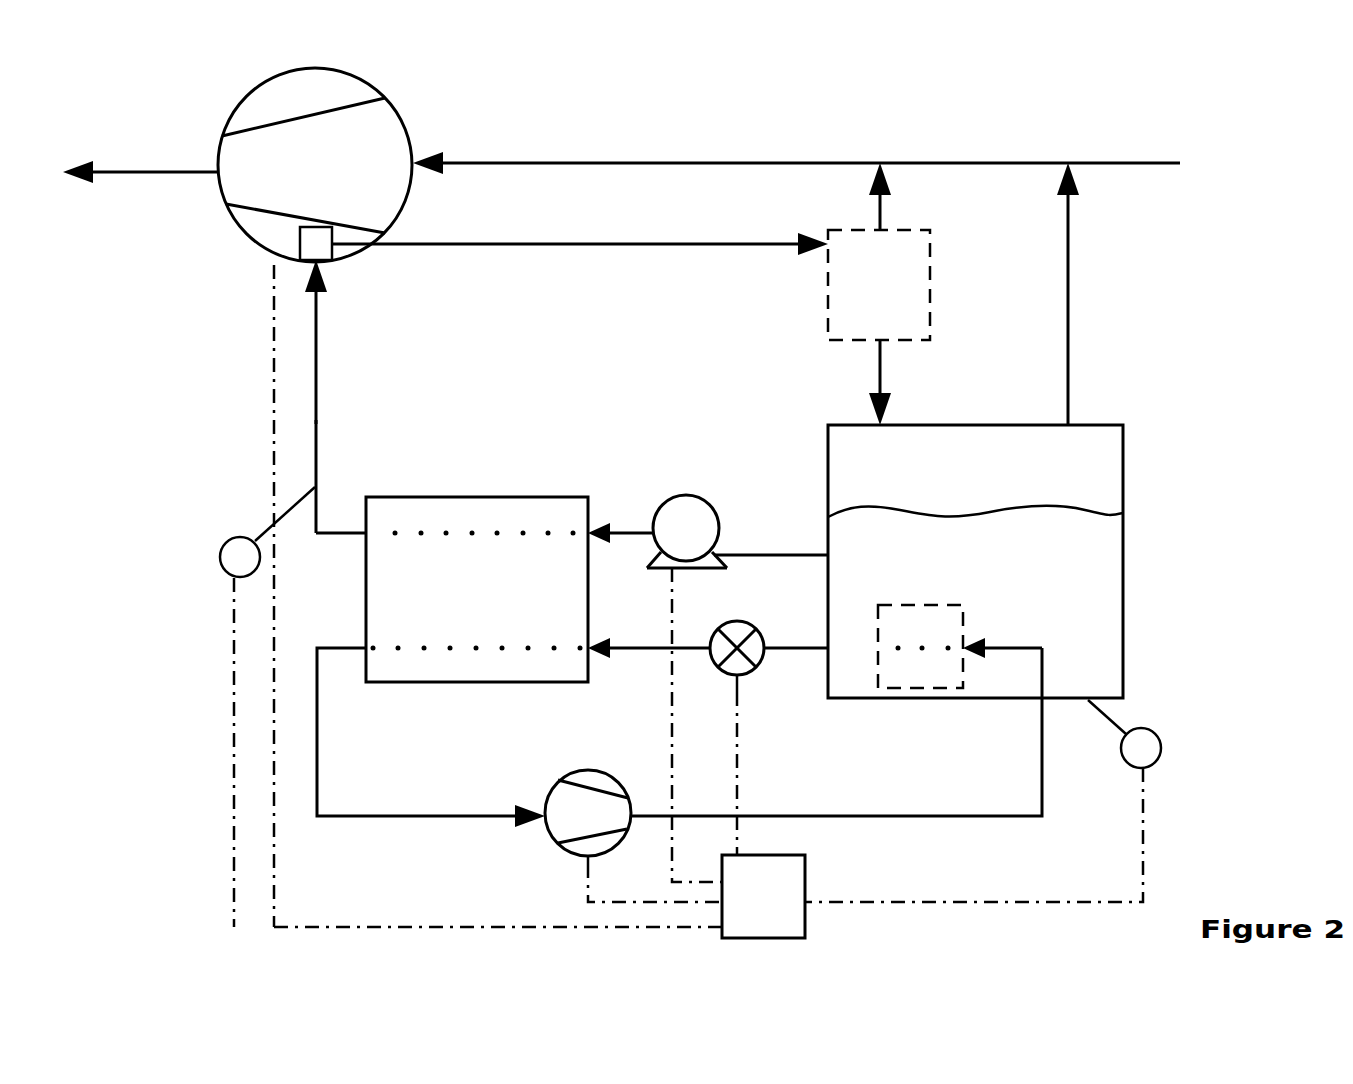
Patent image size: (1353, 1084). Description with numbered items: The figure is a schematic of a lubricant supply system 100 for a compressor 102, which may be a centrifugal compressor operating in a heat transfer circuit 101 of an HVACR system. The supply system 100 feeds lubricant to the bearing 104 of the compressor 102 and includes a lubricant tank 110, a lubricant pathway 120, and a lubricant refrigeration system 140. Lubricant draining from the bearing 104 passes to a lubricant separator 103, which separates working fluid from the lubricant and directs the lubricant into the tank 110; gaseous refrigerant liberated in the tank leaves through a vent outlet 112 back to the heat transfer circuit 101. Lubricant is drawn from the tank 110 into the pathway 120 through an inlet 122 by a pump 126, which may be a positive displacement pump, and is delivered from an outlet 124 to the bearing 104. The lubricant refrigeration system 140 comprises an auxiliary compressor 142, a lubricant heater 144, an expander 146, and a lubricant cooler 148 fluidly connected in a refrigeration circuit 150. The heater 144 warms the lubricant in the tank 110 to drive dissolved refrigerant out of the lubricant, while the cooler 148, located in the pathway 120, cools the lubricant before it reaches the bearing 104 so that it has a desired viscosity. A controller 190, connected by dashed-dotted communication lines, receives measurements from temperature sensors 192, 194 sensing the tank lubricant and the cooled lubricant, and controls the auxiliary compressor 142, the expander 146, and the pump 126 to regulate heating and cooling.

The lubricant supply system 100 is at (200, 402).
The heat transfer circuit 101 is at (570, 163).
The compressor 102 is at (402, 113).
The lubricant separator 103 is at (932, 288).
The bearing 104 is at (290, 237).
The lubricant tank 110 is at (1125, 440).
The vent outlet 112 is at (1068, 375).
The lubricant pathway 120 is at (314, 422).
The inlet 122 is at (820, 555).
The outlet 124 is at (316, 345).
The pump 126 is at (677, 495).
The lubricant refrigeration system 140 is at (258, 689).
The compressor 142 is at (578, 858).
The lubricant heater 144 is at (940, 688).
The expander 146 is at (760, 682).
The lubricant cooler 148 is at (403, 495).
The refrigeration circuit 150 is at (377, 817).
The controller 190 is at (807, 918).
The temperature sensor 192 is at (1157, 758).
The temperature sensor 194 is at (226, 572).